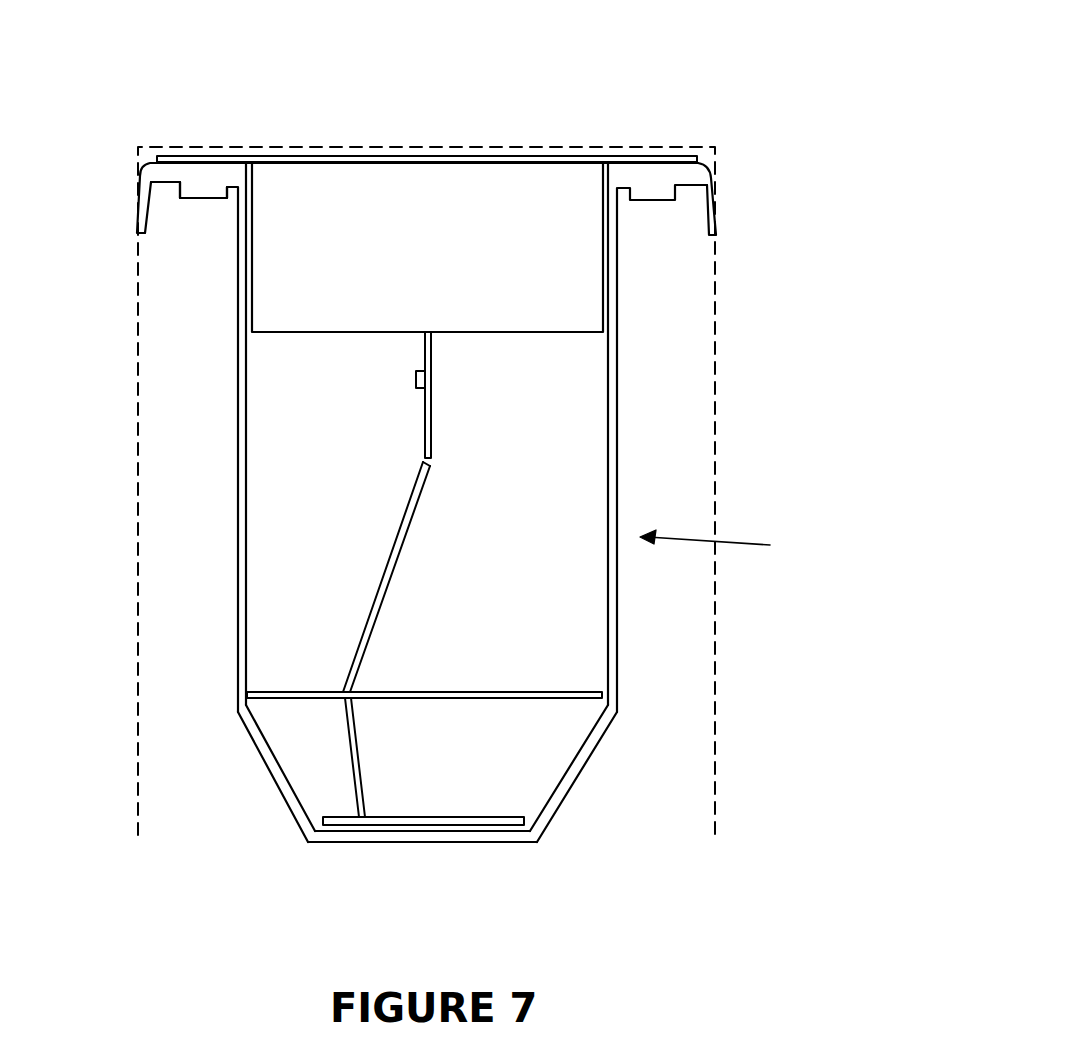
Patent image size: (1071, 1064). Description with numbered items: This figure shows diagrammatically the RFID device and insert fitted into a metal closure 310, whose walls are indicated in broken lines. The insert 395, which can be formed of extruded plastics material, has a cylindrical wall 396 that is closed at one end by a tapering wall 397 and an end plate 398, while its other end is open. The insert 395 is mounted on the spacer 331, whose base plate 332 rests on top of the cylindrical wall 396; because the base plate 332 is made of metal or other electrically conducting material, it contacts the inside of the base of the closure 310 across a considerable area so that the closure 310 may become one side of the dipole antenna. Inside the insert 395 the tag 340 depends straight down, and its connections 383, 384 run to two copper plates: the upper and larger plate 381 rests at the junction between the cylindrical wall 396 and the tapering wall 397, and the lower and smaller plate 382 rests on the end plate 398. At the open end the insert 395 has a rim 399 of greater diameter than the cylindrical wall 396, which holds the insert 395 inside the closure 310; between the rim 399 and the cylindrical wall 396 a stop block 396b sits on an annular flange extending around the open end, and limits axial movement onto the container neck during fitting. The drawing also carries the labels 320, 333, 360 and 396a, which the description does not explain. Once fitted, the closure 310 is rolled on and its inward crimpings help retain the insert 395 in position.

The metal closure 310 is at (715, 147).
The container body 320 is at (715, 425).
The spacer 331 is at (512, 333).
The base plate 332 is at (435, 156).
The upper chamber 333 is at (572, 300).
The tag 340 is at (425, 418).
The tab 360 is at (416, 378).
The upper plate 381 is at (263, 690).
The lower plate 382 is at (527, 823).
The connection 383 is at (365, 612).
The connection 384 is at (357, 780).
The insert 395 is at (735, 548).
The cylindrical wall 396 is at (612, 620).
The left flange 396a is at (170, 185).
The stop block 396b is at (652, 193).
The tapering wall 397 is at (575, 770).
The end plate 398 is at (478, 838).
The rim 399 is at (717, 196).